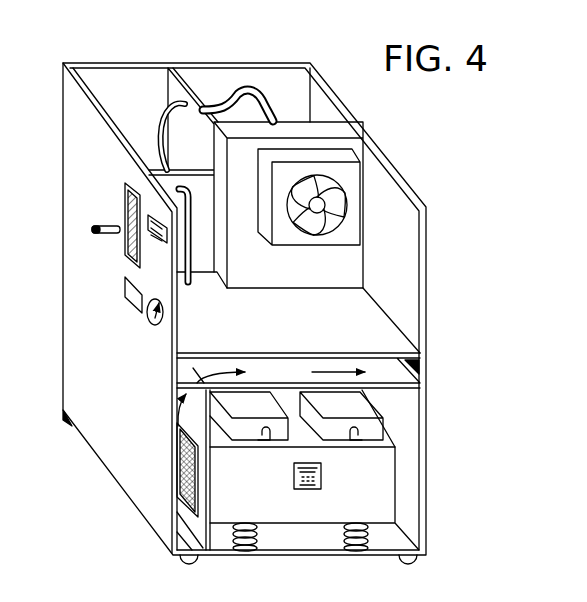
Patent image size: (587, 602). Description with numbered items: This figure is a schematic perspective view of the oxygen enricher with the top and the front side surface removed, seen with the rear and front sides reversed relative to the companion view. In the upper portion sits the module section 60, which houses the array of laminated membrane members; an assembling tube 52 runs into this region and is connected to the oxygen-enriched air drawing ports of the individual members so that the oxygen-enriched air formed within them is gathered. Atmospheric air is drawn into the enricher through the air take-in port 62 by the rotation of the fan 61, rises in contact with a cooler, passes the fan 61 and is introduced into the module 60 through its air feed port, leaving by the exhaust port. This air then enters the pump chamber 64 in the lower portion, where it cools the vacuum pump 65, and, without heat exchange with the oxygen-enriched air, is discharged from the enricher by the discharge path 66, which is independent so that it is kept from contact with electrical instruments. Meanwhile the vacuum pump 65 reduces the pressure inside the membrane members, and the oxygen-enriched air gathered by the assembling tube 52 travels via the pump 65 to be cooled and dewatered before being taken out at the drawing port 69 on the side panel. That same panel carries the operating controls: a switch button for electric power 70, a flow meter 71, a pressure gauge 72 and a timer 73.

The assembling tube 52 is at (267, 118).
The module section 60 is at (297, 78).
The fan 61 is at (348, 181).
The air take-in port 62 is at (156, 85).
The pump chamber 64 is at (398, 418).
The vacuum pump 65 is at (385, 495).
The discharge path 66 is at (408, 385).
The drawing port 69 is at (100, 234).
The switch button for electric power 70 is at (159, 247).
The flow meter 71 is at (125, 213).
The pressure gauge 72 is at (153, 327).
The timer 73 is at (130, 303).